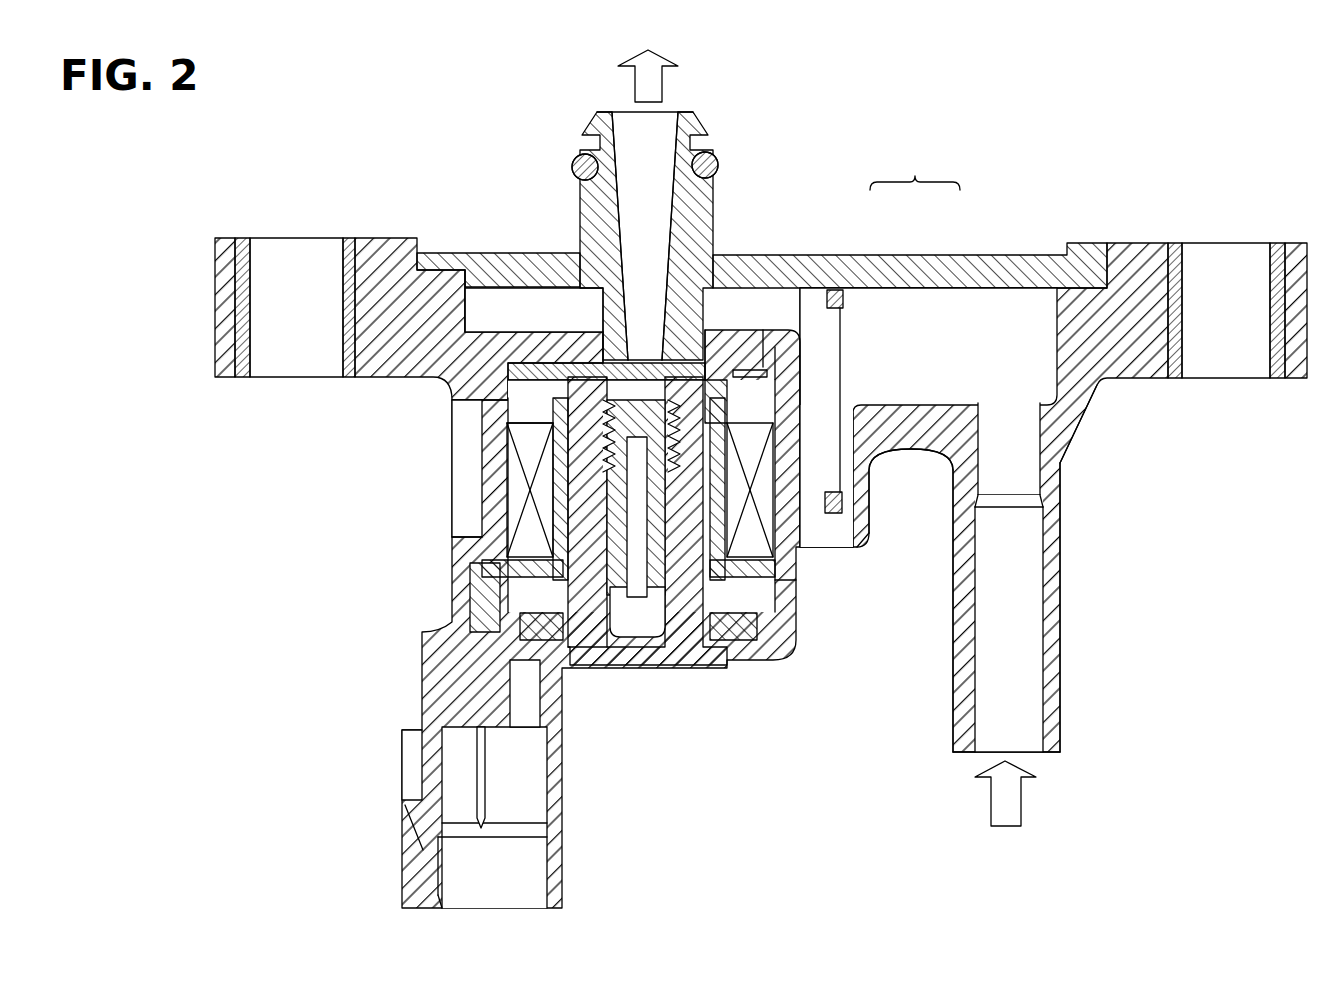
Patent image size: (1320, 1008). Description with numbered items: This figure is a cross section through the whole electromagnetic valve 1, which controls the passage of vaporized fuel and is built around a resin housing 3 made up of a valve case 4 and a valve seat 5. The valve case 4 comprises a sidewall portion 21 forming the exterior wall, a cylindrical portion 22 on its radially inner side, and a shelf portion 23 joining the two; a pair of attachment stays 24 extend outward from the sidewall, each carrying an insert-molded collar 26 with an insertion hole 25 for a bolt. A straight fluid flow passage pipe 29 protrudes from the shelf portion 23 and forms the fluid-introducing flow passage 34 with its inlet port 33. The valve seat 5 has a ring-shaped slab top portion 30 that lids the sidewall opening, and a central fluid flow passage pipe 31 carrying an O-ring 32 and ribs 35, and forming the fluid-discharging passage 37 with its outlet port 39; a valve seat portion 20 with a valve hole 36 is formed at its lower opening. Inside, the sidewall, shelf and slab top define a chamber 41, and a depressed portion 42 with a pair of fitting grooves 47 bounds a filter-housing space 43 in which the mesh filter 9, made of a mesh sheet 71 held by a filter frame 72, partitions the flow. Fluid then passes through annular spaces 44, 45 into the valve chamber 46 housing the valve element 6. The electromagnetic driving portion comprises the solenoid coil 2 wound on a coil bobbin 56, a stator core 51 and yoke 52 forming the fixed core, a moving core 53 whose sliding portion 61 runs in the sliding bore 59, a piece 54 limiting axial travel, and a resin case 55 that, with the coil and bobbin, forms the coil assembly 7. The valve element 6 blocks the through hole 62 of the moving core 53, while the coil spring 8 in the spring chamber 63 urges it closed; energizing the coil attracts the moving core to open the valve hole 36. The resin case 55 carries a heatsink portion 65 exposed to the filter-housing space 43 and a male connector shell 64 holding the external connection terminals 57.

The electromagnetic valve 1 is at (400, 151).
The solenoid coil 2 is at (470, 577).
The housing 3 is at (381, 232).
The valve case 4 is at (510, 445).
The valve seat 5 is at (477, 253).
The valve element 6 is at (700, 362).
The coil assembly 7 is at (440, 547).
The coil spring 8 is at (815, 545).
The mesh filter 9 is at (915, 168).
The valve seat portion 20 is at (558, 470).
The sidewall portion 21 is at (1090, 385).
The cylindrical portion 22 is at (822, 290).
The shelf portion 23 is at (1067, 427).
The attachment stay 24 is at (233, 380).
The insertion hole 25 is at (253, 283).
The collar 26 is at (243, 245).
The fluid flow passage pipe (inlet pipe) 29 is at (1057, 692).
The slab top portion 30 is at (1010, 258).
The fluid flow passage pipe (outlet pipe) 31 is at (583, 133).
The O-ring 32 is at (571, 165).
The inlet port 33 is at (1023, 733).
The fluid-introducing flow passage 34 is at (1023, 467).
The rib 35 is at (712, 372).
The valve hole 36 is at (637, 233).
The fluid-discharging passage 37 is at (583, 210).
The outlet port 39 is at (632, 132).
The chamber 41 is at (995, 350).
The depressed portion 42 is at (857, 535).
The filter-housing space 43 is at (882, 500).
The annular space 44 is at (487, 313).
The annular space 45 is at (640, 327).
The valve chamber 46 is at (506, 392).
The fitting groove 47 is at (775, 310).
The stator core 51 is at (668, 655).
The yoke 52 is at (722, 640).
The moving core 53 is at (638, 600).
The piece 54 is at (614, 596).
The resin case 55 is at (782, 643).
The coil bobbin 56 is at (477, 607).
The external connection terminal 57 is at (479, 783).
The sliding bore 59 is at (552, 622).
The sliding portion 61 is at (495, 525).
The through hole 62 is at (690, 372).
The spring chamber 63 is at (530, 490).
The male connector shell 64 is at (427, 845).
The heatsink portion 65 is at (900, 450).
The mesh sheet 71 is at (840, 350).
The filter frame 72 is at (845, 300).